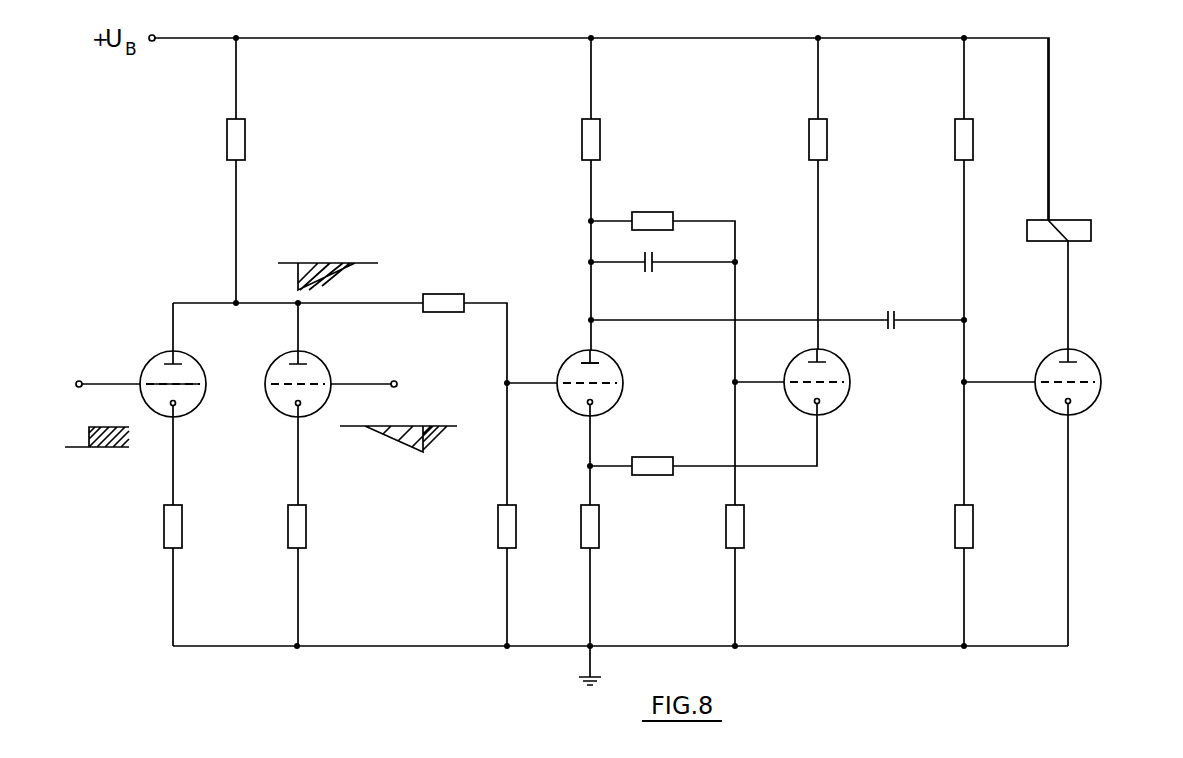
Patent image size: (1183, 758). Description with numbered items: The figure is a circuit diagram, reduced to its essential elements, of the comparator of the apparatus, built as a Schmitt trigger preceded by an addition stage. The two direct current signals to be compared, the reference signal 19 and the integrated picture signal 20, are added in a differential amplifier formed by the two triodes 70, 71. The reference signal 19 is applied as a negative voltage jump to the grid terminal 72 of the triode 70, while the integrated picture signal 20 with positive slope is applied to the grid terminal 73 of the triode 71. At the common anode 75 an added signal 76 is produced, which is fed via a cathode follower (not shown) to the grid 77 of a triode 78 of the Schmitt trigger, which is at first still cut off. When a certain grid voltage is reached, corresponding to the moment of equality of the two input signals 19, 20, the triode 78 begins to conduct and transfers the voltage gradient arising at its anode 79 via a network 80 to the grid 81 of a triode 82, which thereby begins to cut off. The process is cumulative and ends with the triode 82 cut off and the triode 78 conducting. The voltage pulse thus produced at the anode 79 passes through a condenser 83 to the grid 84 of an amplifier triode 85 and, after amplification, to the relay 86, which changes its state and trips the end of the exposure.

The reference signal 19 is at (89, 447).
The integrated picture signal 20 is at (392, 440).
The triode 70 is at (165, 375).
The triode 71 is at (305, 380).
The grid terminal 72 is at (78, 382).
The grid terminal 73 is at (397, 381).
The common anode 75 is at (216, 302).
The added signal 76 is at (299, 290).
The grid 77 is at (533, 377).
The triode 78 is at (600, 393).
The anode 79 is at (597, 363).
The network 80 is at (676, 262).
The grid 81 is at (764, 375).
The triode 82 is at (828, 378).
The condenser 83 is at (897, 318).
The grid 84 is at (987, 374).
The amplifier triode 85 is at (1085, 373).
The relay 86 is at (1070, 226).